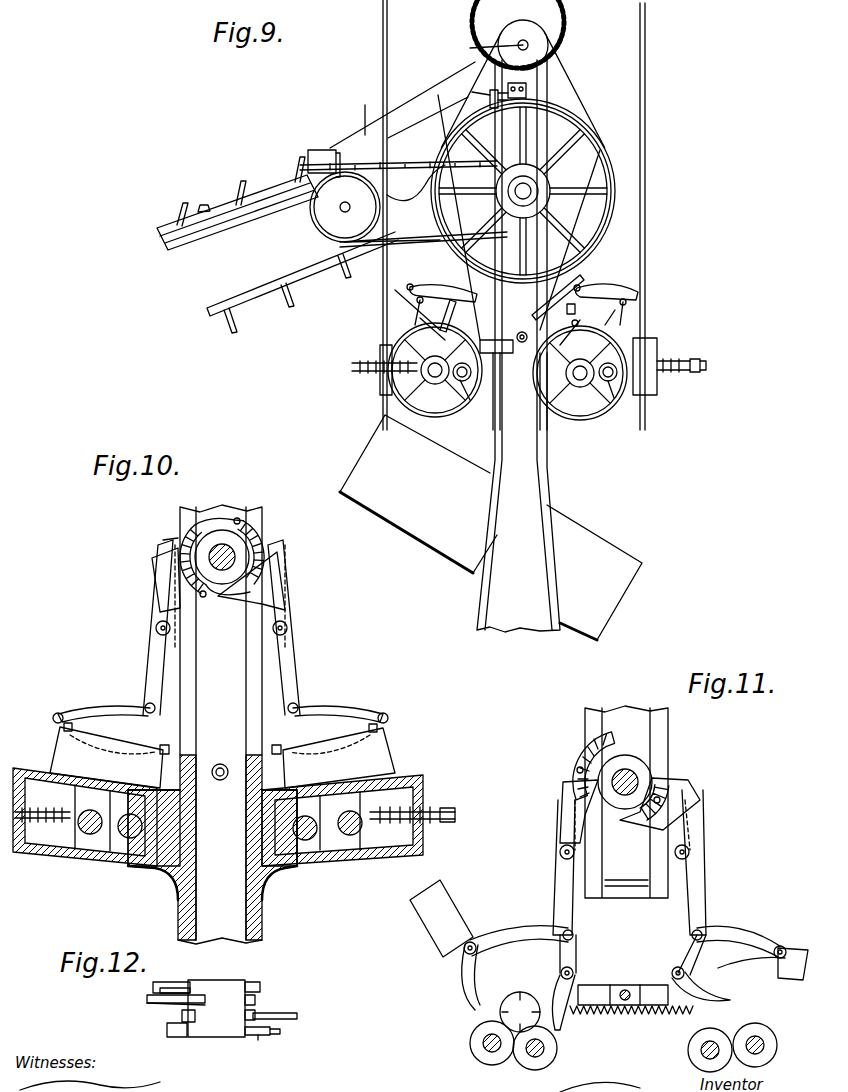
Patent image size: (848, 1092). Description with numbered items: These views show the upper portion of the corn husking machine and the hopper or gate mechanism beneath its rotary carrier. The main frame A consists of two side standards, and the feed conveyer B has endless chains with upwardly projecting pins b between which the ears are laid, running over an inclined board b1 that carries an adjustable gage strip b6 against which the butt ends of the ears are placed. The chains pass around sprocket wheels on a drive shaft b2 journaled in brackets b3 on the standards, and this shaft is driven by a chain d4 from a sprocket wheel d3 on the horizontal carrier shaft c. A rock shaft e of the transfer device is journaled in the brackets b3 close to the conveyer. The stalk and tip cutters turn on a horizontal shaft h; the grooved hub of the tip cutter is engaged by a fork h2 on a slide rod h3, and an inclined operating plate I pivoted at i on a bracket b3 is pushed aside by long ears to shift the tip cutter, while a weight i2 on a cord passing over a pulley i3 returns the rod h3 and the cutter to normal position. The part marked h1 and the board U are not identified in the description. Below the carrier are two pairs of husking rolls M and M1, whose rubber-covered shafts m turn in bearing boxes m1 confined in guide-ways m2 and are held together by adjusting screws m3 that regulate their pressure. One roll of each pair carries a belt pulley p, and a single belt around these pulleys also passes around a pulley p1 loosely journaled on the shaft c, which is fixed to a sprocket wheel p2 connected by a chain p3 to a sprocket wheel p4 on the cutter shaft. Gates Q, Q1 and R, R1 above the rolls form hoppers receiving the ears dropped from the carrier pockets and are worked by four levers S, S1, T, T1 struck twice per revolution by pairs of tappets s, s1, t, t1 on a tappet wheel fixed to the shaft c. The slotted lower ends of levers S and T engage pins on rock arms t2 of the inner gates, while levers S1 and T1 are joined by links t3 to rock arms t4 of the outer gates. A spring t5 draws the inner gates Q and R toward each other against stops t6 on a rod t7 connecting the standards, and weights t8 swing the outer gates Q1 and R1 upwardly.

In FIG. 9, the main frame A is at (518, 346).
In FIG. 10, the main frame A is at (212, 724).
In FIG. 11, the main frame A is at (637, 715).
In FIG. 9, the base board U is at (491, 527).
In FIG. 9, the cutter shaft h is at (548, 45).
In FIG. 9, the gear wheel h1 is at (495, 14).
In FIG. 9, the fork h2 is at (428, 117).
In FIG. 9, the slide rod h3 is at (487, 93).
In FIG. 9, the belt pulley p is at (396, 298).
In FIG. 9, the pulley p1 is at (578, 112).
In FIG. 9, the sprocket wheel p2 is at (590, 138).
In FIG. 9, the chain p3 is at (565, 82).
In FIG. 9, the sprocket wheel p4 is at (488, 36).
In FIG. 9, the carrier shaft c is at (541, 184).
In FIG. 10, the carrier shaft c is at (225, 540).
In FIG. 11, the carrier shaft c is at (628, 775).
In FIG. 9, the sprocket wheel d3 is at (551, 190).
In FIG. 9, the chain d4 is at (416, 243).
In FIG. 9, the pivot i is at (318, 150).
In FIG. 9, the weight i2 is at (520, 391).
In FIG. 9, the pulley i3 is at (532, 155).
In FIG. 9, the inclined operating plate I is at (360, 114).
In FIG. 9, the pins b is at (282, 170).
In FIG. 9, the inclined board b1 is at (185, 255).
In FIG. 9, the drive shaft b2 is at (375, 207).
In FIG. 9, the brackets b3 is at (427, 150).
In FIG. 9, the gage strip b6 is at (165, 237).
In FIG. 9, the feed conveyer B is at (237, 211).
In FIG. 9, the rock shaft e is at (416, 183).
In FIG. 9, the operating lever T is at (498, 315).
In FIG. 10, the operating lever T is at (160, 574).
In FIG. 11, the operating lever T is at (553, 902).
In FIG. 12, the operating lever T is at (185, 982).
In FIG. 9, the operating lever T1 is at (448, 316).
In FIG. 10, the operating lever T1 is at (180, 540).
In FIG. 11, the operating lever T1 is at (575, 915).
In FIG. 12, the operating lever T1 is at (147, 1000).
In FIG. 11, the operating lever S is at (680, 920).
In FIG. 12, the operating lever S is at (290, 1013).
In FIG. 9, the operating lever S1 is at (546, 308).
In FIG. 10, the operating lever S1 is at (290, 640).
In FIG. 11, the operating lever S1 is at (704, 905).
In FIG. 10, the tappets s is at (188, 548).
In FIG. 11, the tappets s is at (600, 736).
In FIG. 12, the tappets s is at (258, 1012).
In FIG. 9, the tappets s1 is at (575, 300).
In FIG. 10, the tappets s1 is at (240, 520).
In FIG. 11, the tappets s1 is at (578, 785).
In FIG. 12, the tappets s1 is at (258, 1037).
In FIG. 10, the tappets t is at (258, 530).
In FIG. 11, the tappets t is at (570, 765).
In FIG. 12, the tappets t is at (182, 982).
In FIG. 10, the tappets t1 is at (264, 540).
In FIG. 11, the tappets t1 is at (592, 770).
In FIG. 12, the tappets t1 is at (158, 990).
In FIG. 10, the rock arms t2 is at (152, 718).
In FIG. 11, the rock arms t2 is at (572, 965).
In FIG. 9, the links t3 is at (450, 290).
In FIG. 10, the links t3 is at (112, 705).
In FIG. 11, the links t3 is at (503, 924).
In FIG. 9, the rock arms t4 is at (662, 298).
In FIG. 10, the rock arms t4 is at (60, 728).
In FIG. 11, the rock arms t4 is at (490, 945).
In FIG. 11, the spring t5 is at (598, 1020).
In FIG. 11, the stops t6 is at (595, 988).
In FIG. 11, the rod t7 is at (628, 1002).
In FIG. 11, the weights t8 is at (800, 948).
In FIG. 9, the roll shafts m is at (440, 385).
In FIG. 10, the roll shafts m is at (90, 834).
In FIG. 9, the bearing boxes m1 is at (468, 380).
In FIG. 9, the guide-ways m2 is at (390, 380).
In FIG. 10, the guide-ways m2 is at (48, 782).
In FIG. 9, the adjusting screws m3 is at (358, 363).
In FIG. 10, the adjusting screws m3 is at (40, 850).
In FIG. 11, the inner gate R is at (556, 988).
In FIG. 11, the outer gate R1 is at (475, 972).
In FIG. 11, the inner gate Q is at (690, 985).
In FIG. 11, the outer gate Q1 is at (752, 967).
In FIG. 11, the husking rolls M is at (738, 1022).
In FIG. 11, the husking rolls M1 is at (498, 1031).